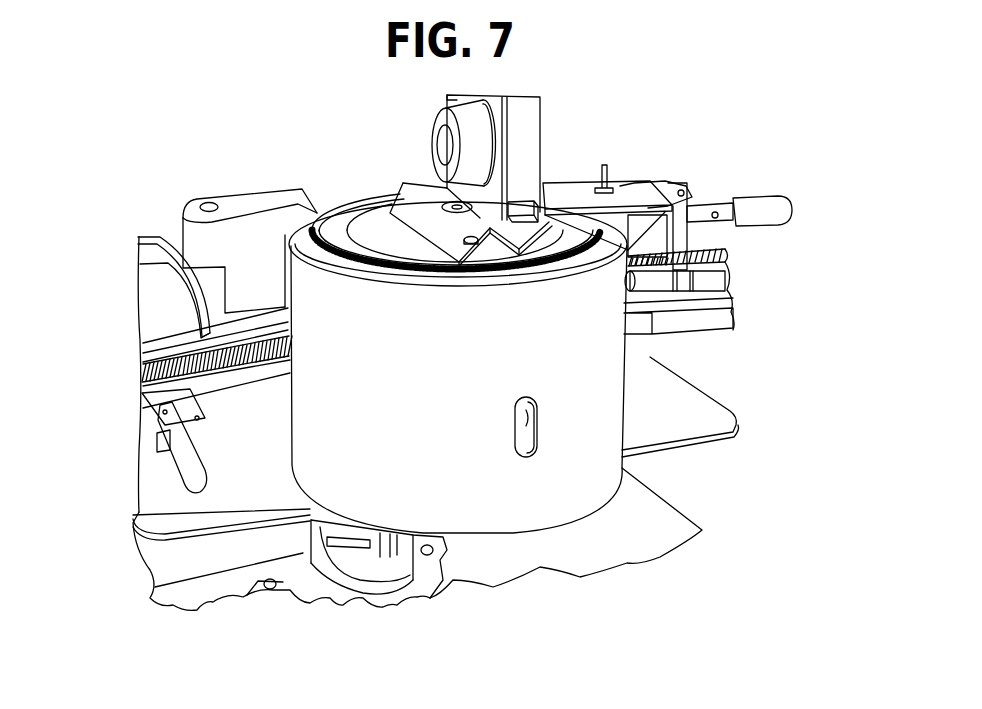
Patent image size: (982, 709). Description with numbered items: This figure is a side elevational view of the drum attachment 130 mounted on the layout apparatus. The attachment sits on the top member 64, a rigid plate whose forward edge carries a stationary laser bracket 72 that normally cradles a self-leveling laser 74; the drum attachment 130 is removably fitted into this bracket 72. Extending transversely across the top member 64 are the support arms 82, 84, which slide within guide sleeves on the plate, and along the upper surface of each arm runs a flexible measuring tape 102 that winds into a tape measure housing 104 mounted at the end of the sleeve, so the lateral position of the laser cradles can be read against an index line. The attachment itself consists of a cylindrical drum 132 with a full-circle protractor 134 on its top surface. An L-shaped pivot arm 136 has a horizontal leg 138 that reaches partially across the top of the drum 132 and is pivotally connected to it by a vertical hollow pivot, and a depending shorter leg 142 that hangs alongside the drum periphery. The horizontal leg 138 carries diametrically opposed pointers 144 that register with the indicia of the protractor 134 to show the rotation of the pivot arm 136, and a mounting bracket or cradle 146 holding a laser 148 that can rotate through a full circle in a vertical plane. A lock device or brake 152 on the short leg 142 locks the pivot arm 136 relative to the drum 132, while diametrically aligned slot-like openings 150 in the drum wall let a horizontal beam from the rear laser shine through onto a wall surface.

The top member 64 is at (720, 421).
The laser bracket 72 is at (210, 270).
The self-leveling laser 74 is at (237, 228).
The support arm 82 is at (237, 385).
The support arm 84 is at (727, 327).
The flexible measuring tape 102 is at (143, 373).
The tape measure housing 104 is at (147, 280).
The drum attachment 130 is at (360, 200).
The drum 132 is at (600, 500).
The 360° protractor 134 is at (333, 221).
The L-shaped pivot arm 136 is at (575, 173).
The horizontal leg 138 is at (587, 184).
The depending shorter leg 142 is at (642, 227).
The pointers 144 is at (417, 188).
The mounting bracket or cradle 146 is at (523, 207).
The laser 148 is at (515, 110).
The slot-like openings 150 is at (527, 414).
The lock device or brake 152 is at (760, 207).